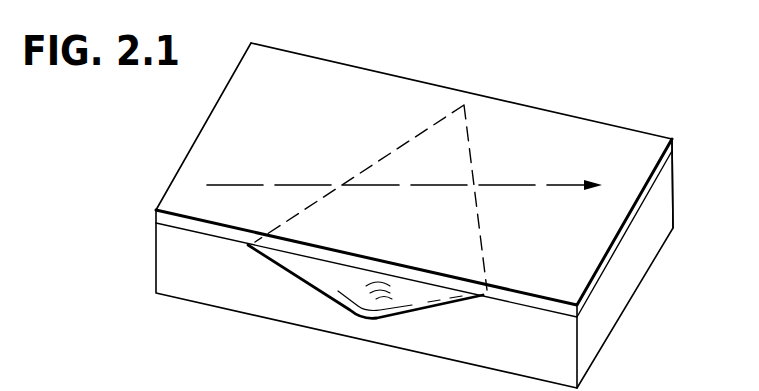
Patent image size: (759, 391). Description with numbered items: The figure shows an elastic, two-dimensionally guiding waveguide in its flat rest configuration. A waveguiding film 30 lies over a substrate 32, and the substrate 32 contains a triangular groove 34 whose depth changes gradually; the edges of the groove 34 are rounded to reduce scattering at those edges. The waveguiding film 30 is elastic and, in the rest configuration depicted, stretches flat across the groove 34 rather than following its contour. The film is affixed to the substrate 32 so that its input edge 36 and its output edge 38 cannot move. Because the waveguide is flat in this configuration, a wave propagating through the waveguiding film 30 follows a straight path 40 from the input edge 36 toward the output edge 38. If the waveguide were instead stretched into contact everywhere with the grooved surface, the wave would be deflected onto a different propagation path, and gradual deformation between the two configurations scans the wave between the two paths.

The waveguiding film 30 is at (252, 63).
The substrate 32 is at (185, 283).
The triangular groove 34 is at (324, 297).
The input edge 36 is at (191, 150).
The output edge 38 is at (663, 167).
The straight path 40 is at (503, 185).